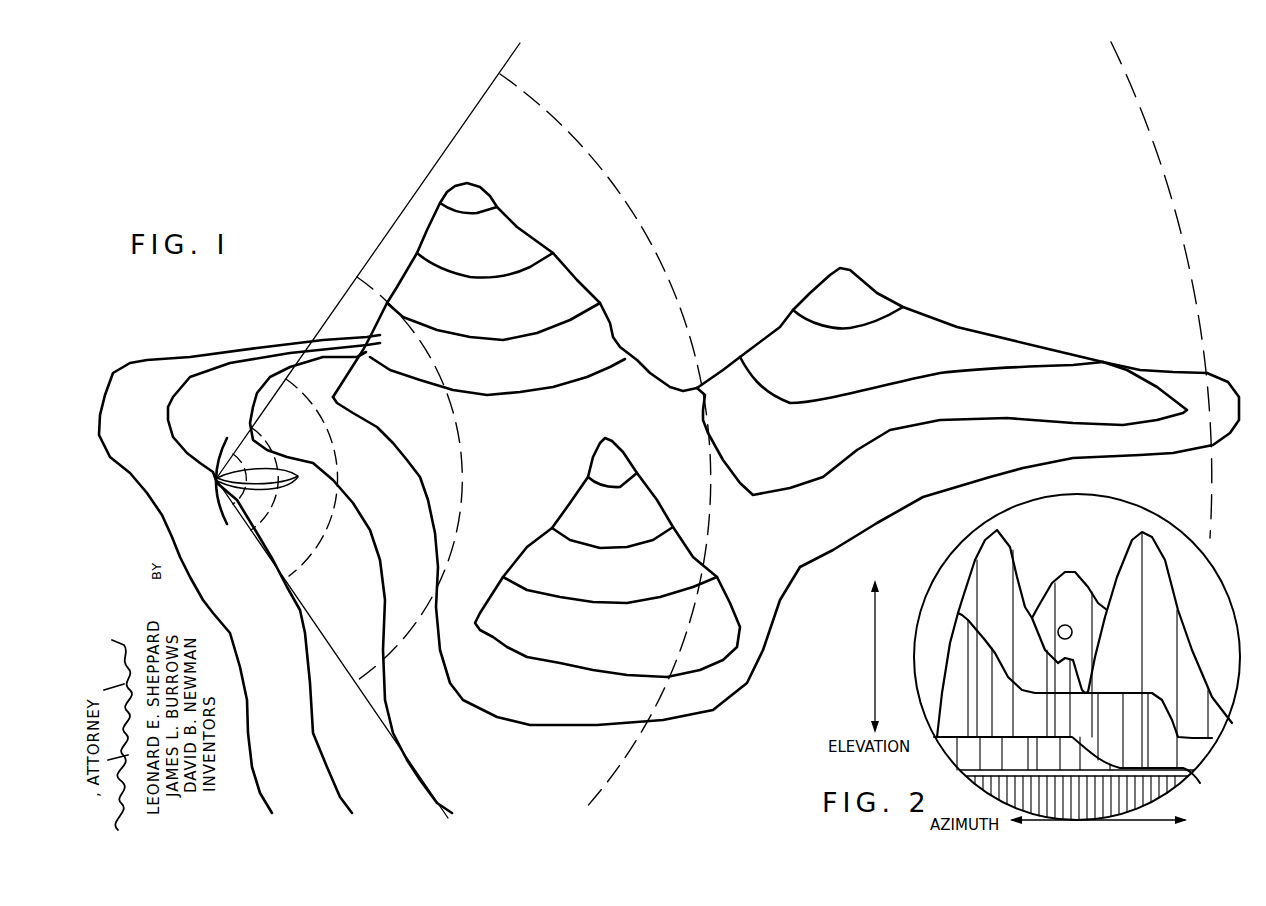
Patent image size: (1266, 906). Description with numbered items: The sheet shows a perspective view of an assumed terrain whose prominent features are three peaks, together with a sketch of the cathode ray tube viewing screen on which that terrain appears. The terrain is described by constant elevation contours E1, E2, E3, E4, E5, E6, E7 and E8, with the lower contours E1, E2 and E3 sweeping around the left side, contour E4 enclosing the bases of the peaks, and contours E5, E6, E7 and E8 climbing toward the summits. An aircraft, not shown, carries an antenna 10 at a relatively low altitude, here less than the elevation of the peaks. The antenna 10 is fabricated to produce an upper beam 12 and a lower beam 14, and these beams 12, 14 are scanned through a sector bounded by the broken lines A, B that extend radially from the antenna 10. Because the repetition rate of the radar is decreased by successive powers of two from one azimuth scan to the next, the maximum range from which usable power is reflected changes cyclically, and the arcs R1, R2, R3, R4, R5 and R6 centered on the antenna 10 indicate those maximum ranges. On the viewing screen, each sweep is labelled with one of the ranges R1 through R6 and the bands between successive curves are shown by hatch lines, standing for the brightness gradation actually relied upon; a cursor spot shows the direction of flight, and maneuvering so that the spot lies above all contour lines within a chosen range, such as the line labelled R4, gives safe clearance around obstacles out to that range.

In FIG. 1, the antenna 10 is at (220, 455).
In FIG. 1, the upper beam 12 is at (268, 472).
In FIG. 1, the lower beam 14 is at (282, 492).
In FIG. 1, the broken line A is at (378, 255).
In FIG. 1, the broken line B is at (342, 654).
In FIG. 1, the constant elevation contour E1 is at (205, 607).
In FIG. 1, the constant elevation contour E2 is at (289, 578).
In FIG. 1, the constant elevation contour E3 is at (355, 503).
In FIG. 1, the constant elevation contour E4 is at (437, 470).
In FIG. 1, the constant elevation contour E5 is at (625, 359).
In FIG. 1, the constant elevation contour E6 is at (600, 303).
In FIG. 1, the constant elevation contour E7 is at (553, 254).
In FIG. 1, the constant elevation contour E8 is at (440, 203).
In FIG. 1, the maximum range arc R1 is at (247, 474).
In FIG. 2, the maximum range arc R1 is at (1077, 790).
In FIG. 1, the maximum range arc R2 is at (269, 474).
In FIG. 2, the maximum range arc R2 is at (1025, 770).
In FIG. 1, the maximum range arc R3 is at (312, 474).
In FIG. 2, the maximum range arc R3 is at (1010, 738).
In FIG. 1, the maximum range arc R4 is at (392, 473).
In FIG. 2, the maximum range arc R4 is at (958, 613).
In FIG. 1, the maximum range arc R5 is at (605, 442).
In FIG. 2, the maximum range arc R5 is at (1000, 530).
In FIG. 1, the maximum range arc R6 is at (1147, 290).
In FIG. 2, the maximum range arc R6 is at (1070, 571).